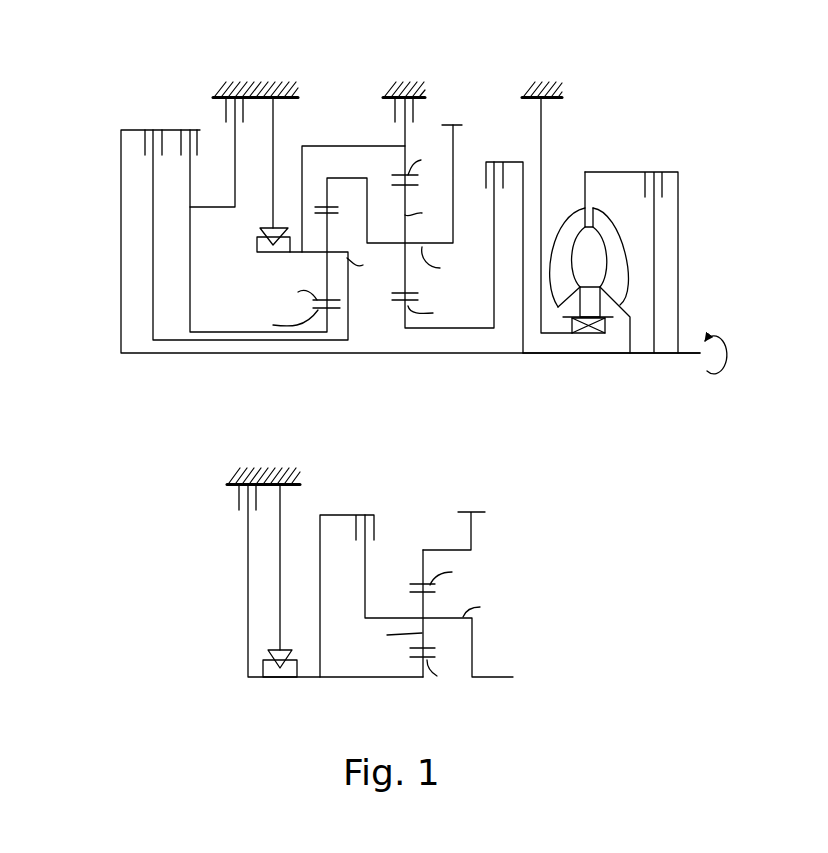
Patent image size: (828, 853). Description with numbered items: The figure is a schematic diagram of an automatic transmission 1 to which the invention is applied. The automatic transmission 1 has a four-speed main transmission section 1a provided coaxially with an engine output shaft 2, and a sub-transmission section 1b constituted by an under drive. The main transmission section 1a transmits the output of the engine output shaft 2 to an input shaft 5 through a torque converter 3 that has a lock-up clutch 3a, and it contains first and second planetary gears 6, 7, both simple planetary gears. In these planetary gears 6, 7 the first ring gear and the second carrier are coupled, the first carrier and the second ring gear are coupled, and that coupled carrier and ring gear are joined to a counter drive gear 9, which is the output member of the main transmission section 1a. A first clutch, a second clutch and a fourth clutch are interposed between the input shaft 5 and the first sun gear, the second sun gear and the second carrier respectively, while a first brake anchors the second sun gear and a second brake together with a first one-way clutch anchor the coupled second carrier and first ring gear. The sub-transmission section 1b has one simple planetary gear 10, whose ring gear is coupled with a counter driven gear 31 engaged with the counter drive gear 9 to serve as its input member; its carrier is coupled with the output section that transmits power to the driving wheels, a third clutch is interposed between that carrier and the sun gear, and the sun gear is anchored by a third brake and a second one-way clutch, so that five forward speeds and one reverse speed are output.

The automatic transmission 1 is at (106, 37).
The four-speed main transmission section 1a is at (338, 60).
The sub-transmission section 1b is at (184, 505).
The engine output shaft 2 is at (685, 357).
The torque converter 3 is at (615, 156).
The lock-up clutch 3a is at (655, 183).
The input shaft 5 is at (580, 357).
The first planetary gear 6 is at (446, 78).
The second planetary gear 7 is at (333, 138).
The counter drive gear 9 is at (458, 125).
The simple planetary gear 10 is at (513, 527).
The counter driven gear 31 is at (466, 513).